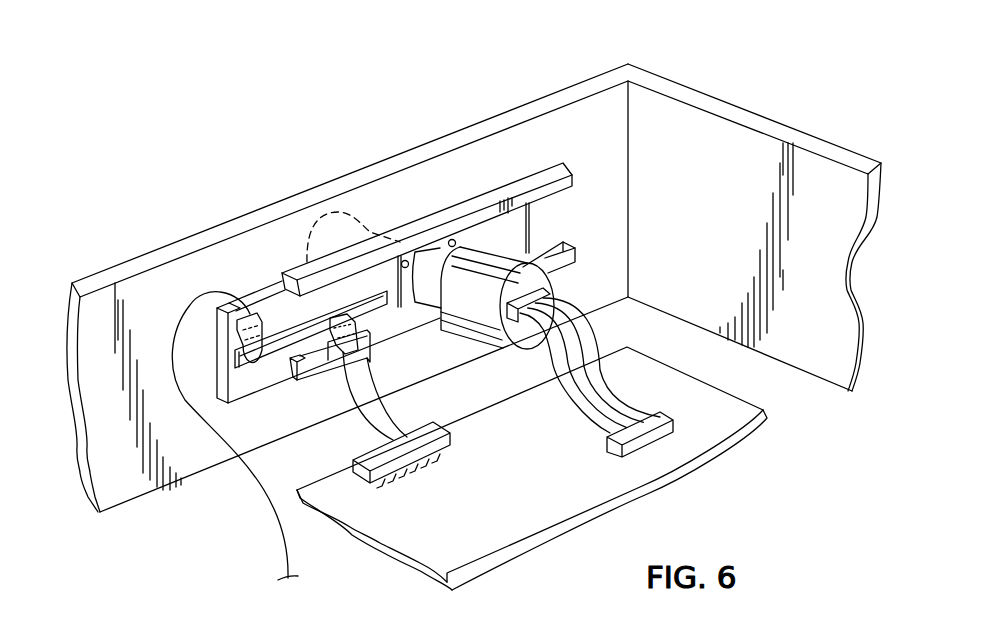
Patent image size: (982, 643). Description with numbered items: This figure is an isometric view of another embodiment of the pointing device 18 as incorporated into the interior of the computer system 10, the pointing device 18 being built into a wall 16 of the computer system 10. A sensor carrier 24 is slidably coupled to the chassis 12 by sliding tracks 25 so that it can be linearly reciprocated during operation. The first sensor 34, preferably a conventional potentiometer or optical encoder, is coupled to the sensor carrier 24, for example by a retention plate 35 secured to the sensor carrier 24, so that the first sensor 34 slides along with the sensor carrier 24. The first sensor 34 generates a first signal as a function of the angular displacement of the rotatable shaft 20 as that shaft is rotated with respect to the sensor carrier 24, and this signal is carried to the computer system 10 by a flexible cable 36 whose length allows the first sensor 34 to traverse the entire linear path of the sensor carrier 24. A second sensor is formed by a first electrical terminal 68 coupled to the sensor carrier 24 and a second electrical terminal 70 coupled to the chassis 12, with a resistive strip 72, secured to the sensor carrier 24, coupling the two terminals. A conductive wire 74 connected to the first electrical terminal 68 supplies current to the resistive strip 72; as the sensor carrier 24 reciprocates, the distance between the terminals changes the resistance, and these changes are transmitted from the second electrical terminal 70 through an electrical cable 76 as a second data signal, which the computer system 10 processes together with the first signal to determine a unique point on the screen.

The computer system 10 is at (250, 121).
The chassis 12 is at (659, 76).
The wall 16 is at (228, 222).
The pointing device 18 is at (458, 187).
The rotatable shaft 20 is at (353, 214).
The sensor carrier 24 is at (517, 223).
The sliding tracks 25 is at (565, 180).
The first sensor 34 is at (512, 256).
The retention plate 35 is at (447, 238).
The flexible cable 36 is at (598, 348).
The first electrical terminal 68 is at (250, 316).
The second electrical terminal 70 is at (355, 318).
The resistive strip 72 is at (300, 333).
The conductive wire 74 is at (192, 405).
The electrical cable 76 is at (380, 383).